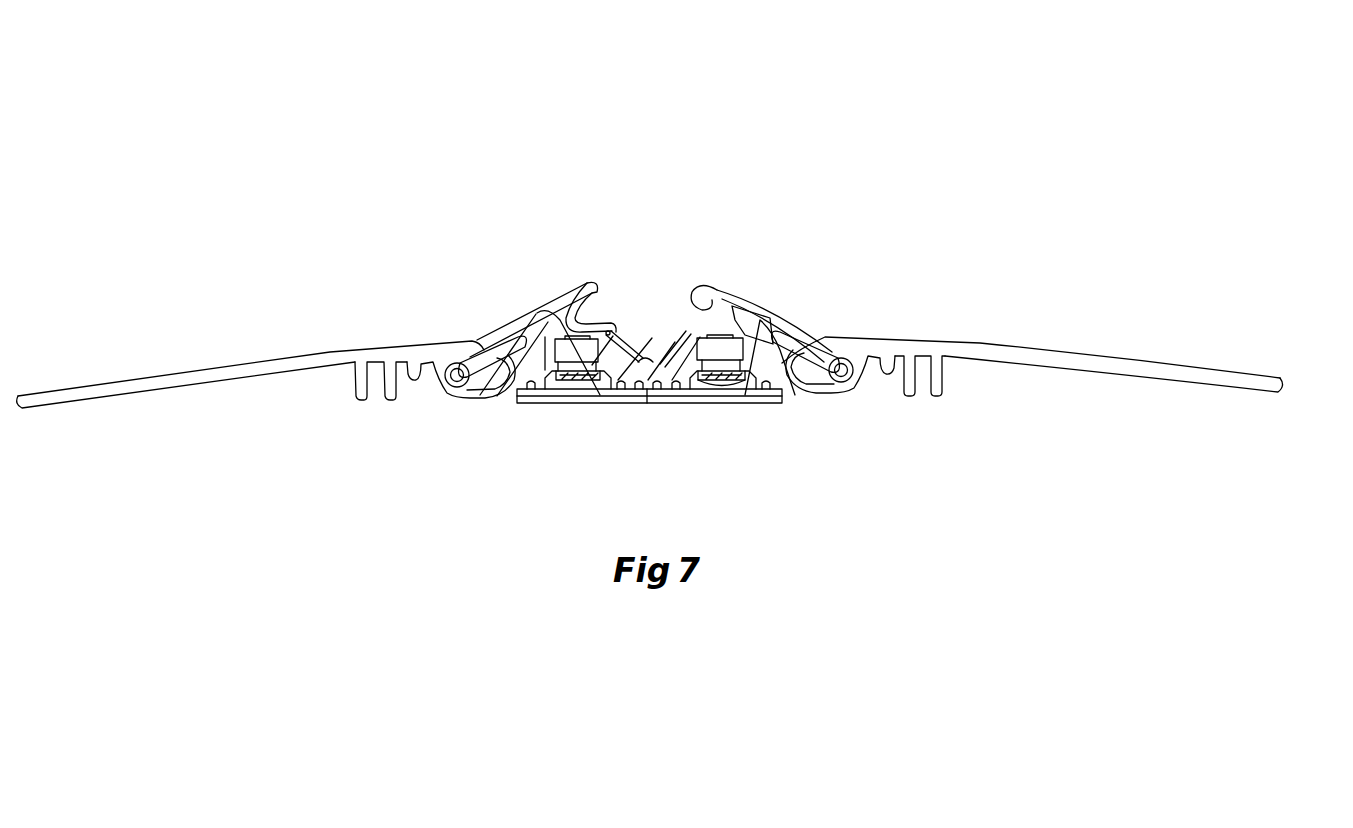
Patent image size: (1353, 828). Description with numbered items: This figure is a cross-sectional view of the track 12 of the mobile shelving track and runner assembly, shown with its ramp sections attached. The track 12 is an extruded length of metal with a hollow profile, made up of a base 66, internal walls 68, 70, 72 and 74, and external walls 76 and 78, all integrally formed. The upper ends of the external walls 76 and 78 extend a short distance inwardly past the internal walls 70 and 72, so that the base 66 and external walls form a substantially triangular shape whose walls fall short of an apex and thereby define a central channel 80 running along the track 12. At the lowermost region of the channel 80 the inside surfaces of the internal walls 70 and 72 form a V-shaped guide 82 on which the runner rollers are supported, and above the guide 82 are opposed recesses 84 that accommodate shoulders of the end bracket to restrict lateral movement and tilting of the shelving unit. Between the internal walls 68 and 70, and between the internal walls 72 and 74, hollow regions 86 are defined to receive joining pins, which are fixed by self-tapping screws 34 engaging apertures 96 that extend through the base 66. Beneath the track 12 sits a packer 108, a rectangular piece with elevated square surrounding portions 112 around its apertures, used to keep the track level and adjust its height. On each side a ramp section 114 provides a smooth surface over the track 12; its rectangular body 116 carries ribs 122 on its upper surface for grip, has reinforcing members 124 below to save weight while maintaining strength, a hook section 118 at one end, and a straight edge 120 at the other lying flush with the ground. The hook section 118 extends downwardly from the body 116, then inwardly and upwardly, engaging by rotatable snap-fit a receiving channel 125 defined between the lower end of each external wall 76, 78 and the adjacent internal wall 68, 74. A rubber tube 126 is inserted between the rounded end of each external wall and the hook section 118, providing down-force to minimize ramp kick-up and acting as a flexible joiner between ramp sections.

The track 12 is at (730, 288).
The self-tapping screws 34 is at (708, 386).
The base 66 is at (673, 398).
The internal wall 68 is at (506, 346).
The internal wall 70 is at (570, 327).
The internal wall 72 is at (745, 290).
The internal wall 74 is at (792, 327).
The external wall 76 is at (517, 327).
The external wall 78 is at (797, 342).
The central channel 80 is at (655, 308).
The V-shaped guide 82 is at (678, 339).
The opposed recesses 84 is at (595, 320).
The hollow regions 86 is at (529, 398).
The apertures 96 is at (590, 386).
The packer 108 is at (517, 392).
The elevated square surrounding portions 112 is at (564, 386).
The ramp section 114 is at (170, 366).
The body 116 is at (1218, 380).
The hook section 118 is at (440, 396).
The straight edge 120 is at (1283, 378).
The ribs 122 is at (1031, 347).
The reinforcing members 124 is at (358, 402).
The receiving channels 125 is at (798, 400).
The rubber tube 126 is at (450, 362).